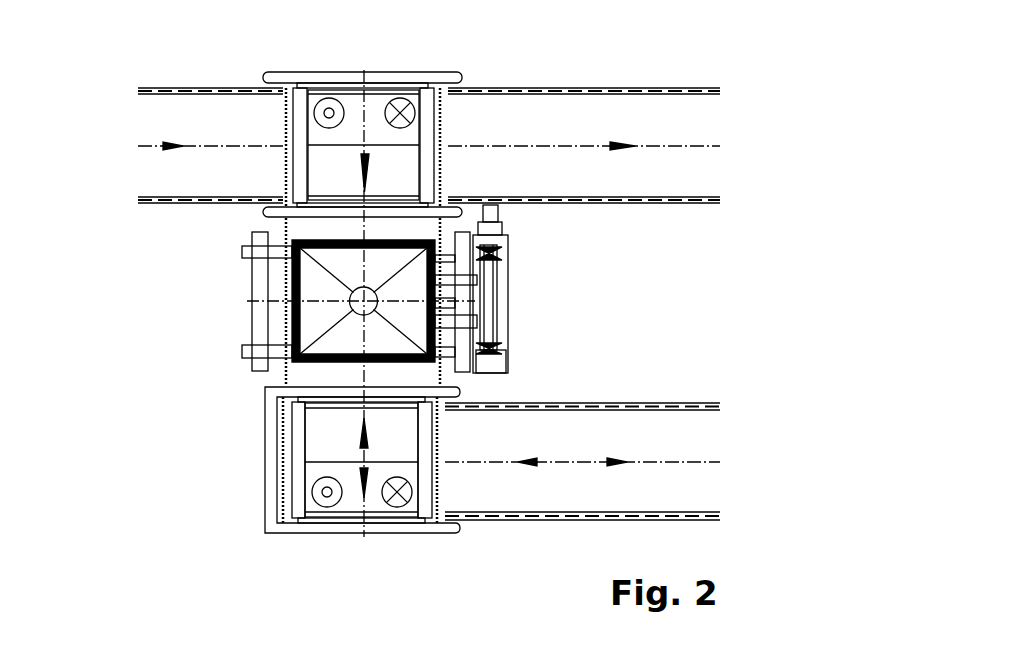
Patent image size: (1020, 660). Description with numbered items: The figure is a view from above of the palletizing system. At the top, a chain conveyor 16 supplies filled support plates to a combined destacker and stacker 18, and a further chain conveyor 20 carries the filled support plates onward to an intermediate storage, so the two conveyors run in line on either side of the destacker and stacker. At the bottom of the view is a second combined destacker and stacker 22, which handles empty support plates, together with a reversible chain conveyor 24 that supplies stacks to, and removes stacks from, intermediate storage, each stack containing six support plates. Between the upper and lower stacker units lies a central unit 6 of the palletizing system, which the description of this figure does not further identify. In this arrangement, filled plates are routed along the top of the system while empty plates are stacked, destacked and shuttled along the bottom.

The treatment head unit 6 is at (300, 314).
The chain conveyor 16 is at (200, 202).
The combined destacker and stacker 18 is at (300, 73).
The chain conveyor 20 is at (668, 205).
The combined destacker and stacker 22 is at (267, 482).
The reversible chain conveyor 24 is at (677, 520).